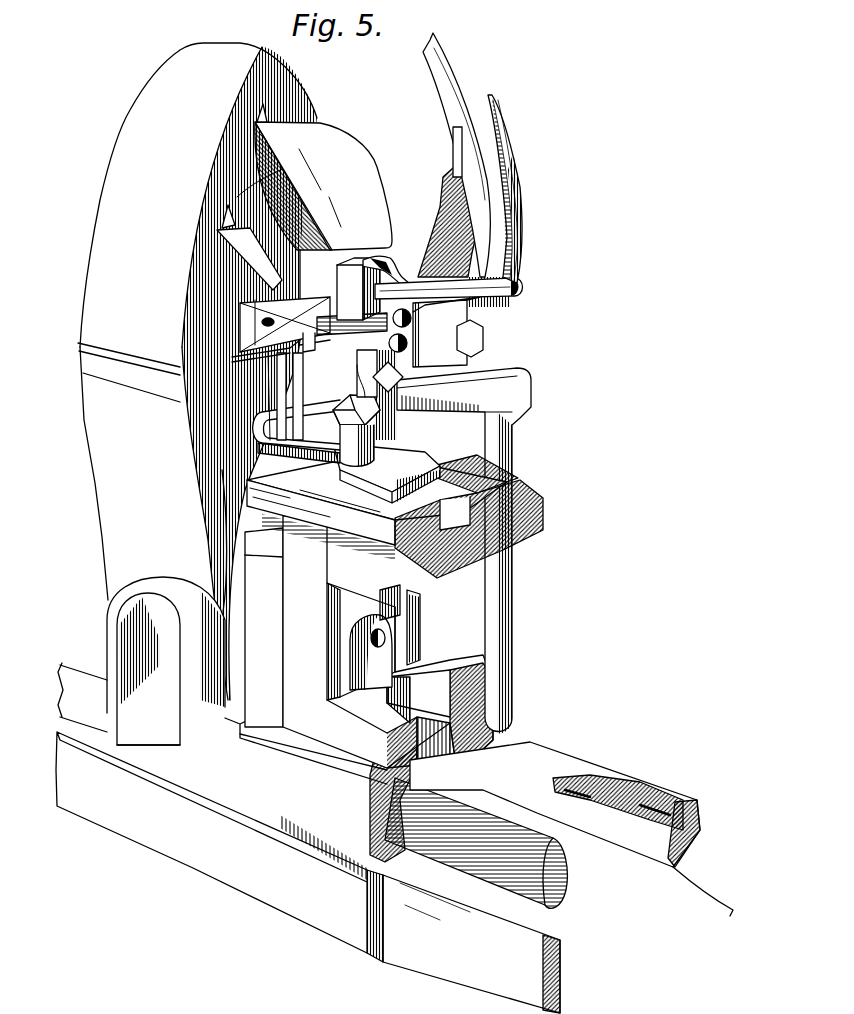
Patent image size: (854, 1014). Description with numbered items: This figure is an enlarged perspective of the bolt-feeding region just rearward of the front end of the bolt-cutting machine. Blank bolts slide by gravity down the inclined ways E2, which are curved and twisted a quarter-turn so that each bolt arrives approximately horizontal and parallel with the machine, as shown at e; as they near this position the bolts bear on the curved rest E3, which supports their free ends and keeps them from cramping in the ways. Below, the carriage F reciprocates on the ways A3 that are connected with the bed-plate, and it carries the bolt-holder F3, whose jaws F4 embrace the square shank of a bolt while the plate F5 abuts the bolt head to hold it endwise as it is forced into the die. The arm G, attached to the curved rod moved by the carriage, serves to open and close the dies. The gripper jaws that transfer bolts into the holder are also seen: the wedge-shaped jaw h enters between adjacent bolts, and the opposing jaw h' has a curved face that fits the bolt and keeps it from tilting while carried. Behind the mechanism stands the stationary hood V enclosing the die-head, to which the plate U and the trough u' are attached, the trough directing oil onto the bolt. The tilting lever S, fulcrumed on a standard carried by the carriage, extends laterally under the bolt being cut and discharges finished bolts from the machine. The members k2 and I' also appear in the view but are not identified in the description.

The stationary hood V is at (197, 371).
The plate U is at (323, 177).
The trough u' is at (249, 247).
The gripper jaw h is at (386, 264).
The opposing gripper jaw h' is at (358, 289).
The ways E2 is at (474, 158).
The curved rest E3 is at (458, 143).
The delivered bolt position e is at (417, 313).
The rod k2 is at (459, 286).
The carriage F is at (377, 503).
The bolt-holder F3 is at (386, 471).
The jaws F4 is at (357, 368).
The plate F5 is at (338, 372).
The arm G is at (388, 377).
The tilting lever S is at (296, 431).
The ways A3 is at (522, 512).
The rail I' is at (463, 941).